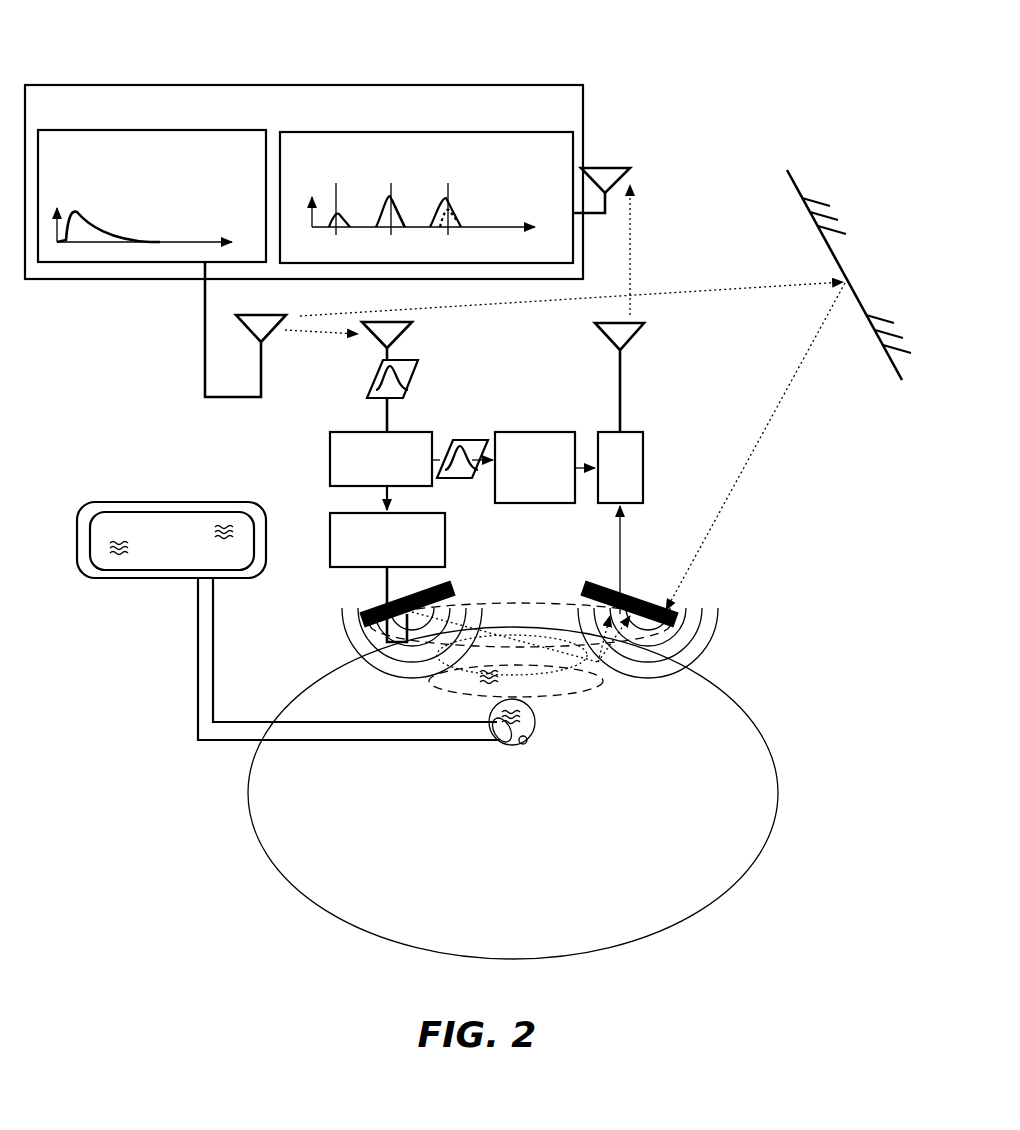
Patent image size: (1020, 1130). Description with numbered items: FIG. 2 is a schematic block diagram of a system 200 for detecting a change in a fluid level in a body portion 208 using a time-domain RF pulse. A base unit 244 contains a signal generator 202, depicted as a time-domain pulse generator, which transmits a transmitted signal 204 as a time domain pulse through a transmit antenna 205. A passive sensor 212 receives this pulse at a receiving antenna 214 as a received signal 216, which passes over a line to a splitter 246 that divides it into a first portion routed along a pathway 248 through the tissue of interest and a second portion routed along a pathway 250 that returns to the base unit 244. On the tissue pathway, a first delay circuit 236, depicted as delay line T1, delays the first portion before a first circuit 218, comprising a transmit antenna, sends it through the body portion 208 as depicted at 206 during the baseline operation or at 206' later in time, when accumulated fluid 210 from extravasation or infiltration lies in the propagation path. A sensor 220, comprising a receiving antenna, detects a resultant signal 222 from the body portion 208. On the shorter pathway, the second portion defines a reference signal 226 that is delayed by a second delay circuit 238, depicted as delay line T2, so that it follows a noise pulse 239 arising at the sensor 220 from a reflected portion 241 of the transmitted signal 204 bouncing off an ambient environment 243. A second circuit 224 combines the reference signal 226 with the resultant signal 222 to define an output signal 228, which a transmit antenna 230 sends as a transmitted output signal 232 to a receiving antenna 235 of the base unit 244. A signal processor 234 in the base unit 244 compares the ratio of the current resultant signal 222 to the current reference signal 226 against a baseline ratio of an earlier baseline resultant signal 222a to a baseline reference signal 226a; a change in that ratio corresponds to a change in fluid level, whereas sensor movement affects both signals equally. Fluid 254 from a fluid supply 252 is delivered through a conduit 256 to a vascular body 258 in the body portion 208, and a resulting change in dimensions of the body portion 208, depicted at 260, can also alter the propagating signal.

The system 200 is at (204, 40).
The signal generator 202 is at (105, 128).
The transmitted signal 204 is at (325, 340).
The transmit antenna 205 is at (203, 326).
The first portion of a received signal 206 is at (520, 613).
The first portion of a received signal 206' is at (551, 657).
The body portion 208 is at (758, 710).
The fluid 210 is at (430, 690).
The passive sensor 212 is at (455, 395).
The receiving (RX) antenna 214 is at (385, 406).
The received signal 216 is at (372, 380).
The first circuit 218 is at (360, 612).
The sensor 220 is at (680, 615).
The resultant signal 222 is at (466, 218).
The baseline resultant signal 222a is at (456, 206).
The second circuit 224 is at (644, 480).
The reference signal 226 is at (398, 210).
The baseline reference signal 226a is at (396, 216).
The output signal 228 is at (617, 390).
The transmit antenna 230 is at (635, 350).
The transmitted output signal 232 is at (636, 260).
The signal processor 234 is at (548, 131).
The receiving antenna 235 is at (603, 214).
The first delay circuit 236 is at (328, 556).
The second delay circuit 238 is at (545, 504).
The noise pulse 239 is at (341, 212).
The reflected portion 241 is at (760, 437).
The ambient environment 243 is at (808, 198).
The base unit 244 is at (478, 84).
The splitter 246 is at (330, 462).
The pathway 248 is at (235, 470).
The pathway 250 is at (488, 418).
The fluid supply 252 is at (76, 562).
The fluid 254 is at (155, 528).
The conduit 256 is at (214, 670).
The vascular body 258 is at (532, 738).
The change in dimensions 260 is at (366, 640).